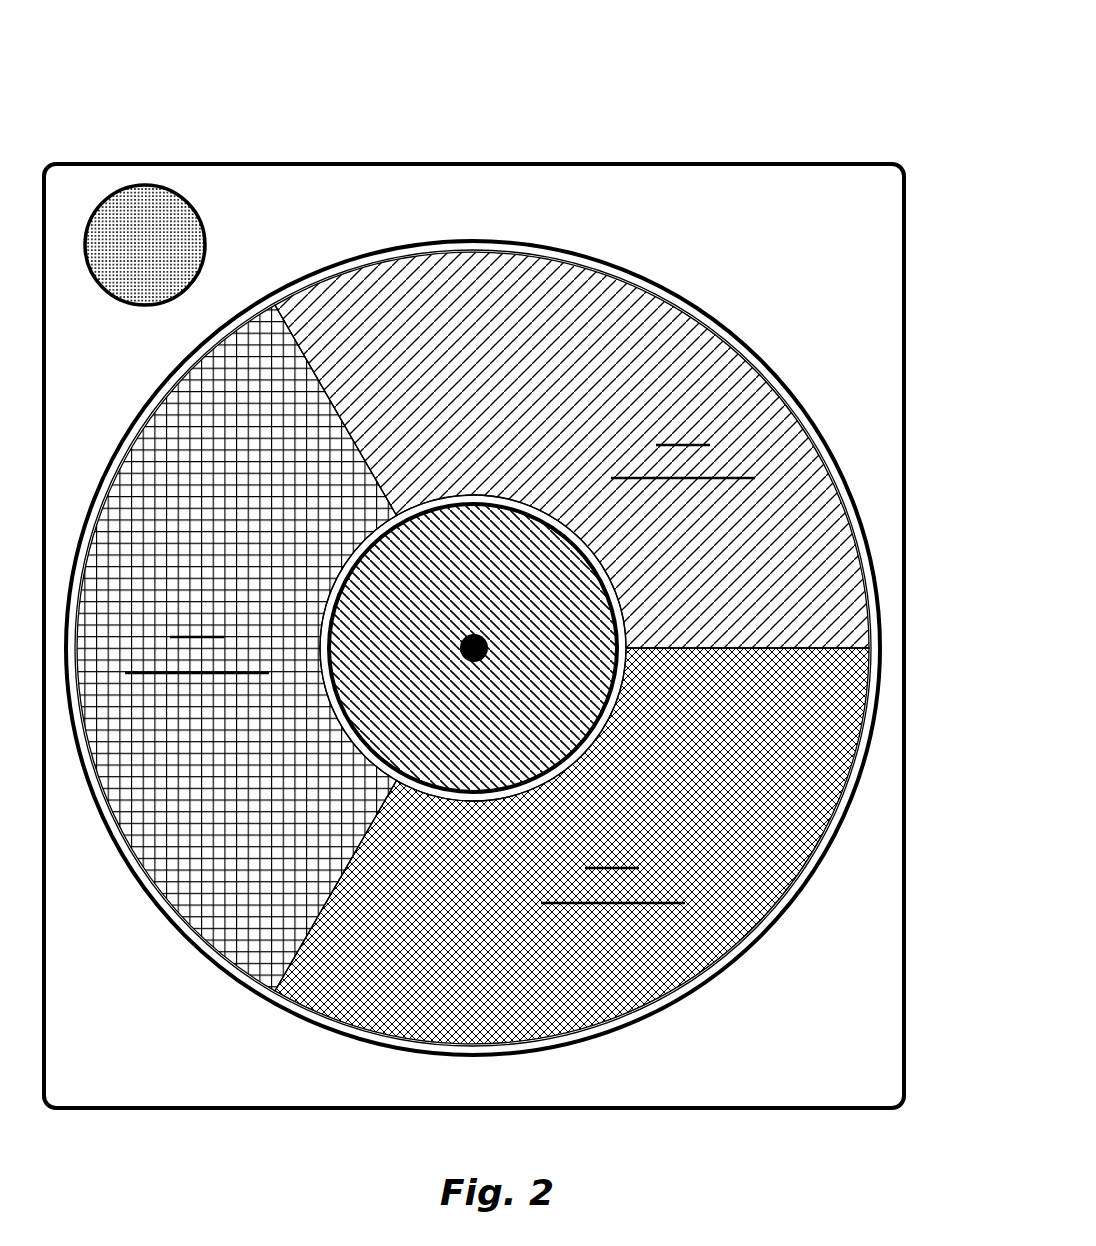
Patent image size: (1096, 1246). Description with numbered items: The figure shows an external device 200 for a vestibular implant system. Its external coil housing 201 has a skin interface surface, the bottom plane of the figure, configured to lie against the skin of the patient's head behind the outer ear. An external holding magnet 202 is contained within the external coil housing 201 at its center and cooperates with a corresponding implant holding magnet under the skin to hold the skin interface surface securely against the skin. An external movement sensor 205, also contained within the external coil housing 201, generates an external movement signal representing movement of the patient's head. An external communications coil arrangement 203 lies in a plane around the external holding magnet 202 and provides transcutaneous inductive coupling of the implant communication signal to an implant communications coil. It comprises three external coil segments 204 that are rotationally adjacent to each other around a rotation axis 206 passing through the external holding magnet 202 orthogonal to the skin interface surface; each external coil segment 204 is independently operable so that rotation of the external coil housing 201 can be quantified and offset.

The external device 200 is at (722, 65).
The external coil housing 201 is at (410, 163).
The external holding magnet 202 is at (449, 735).
The external communications coil arrangement 203 is at (473, 626).
The external coil segment 204 is at (722, 352).
The external movement sensor 205 is at (150, 206).
The rotation axis 206 is at (482, 634).